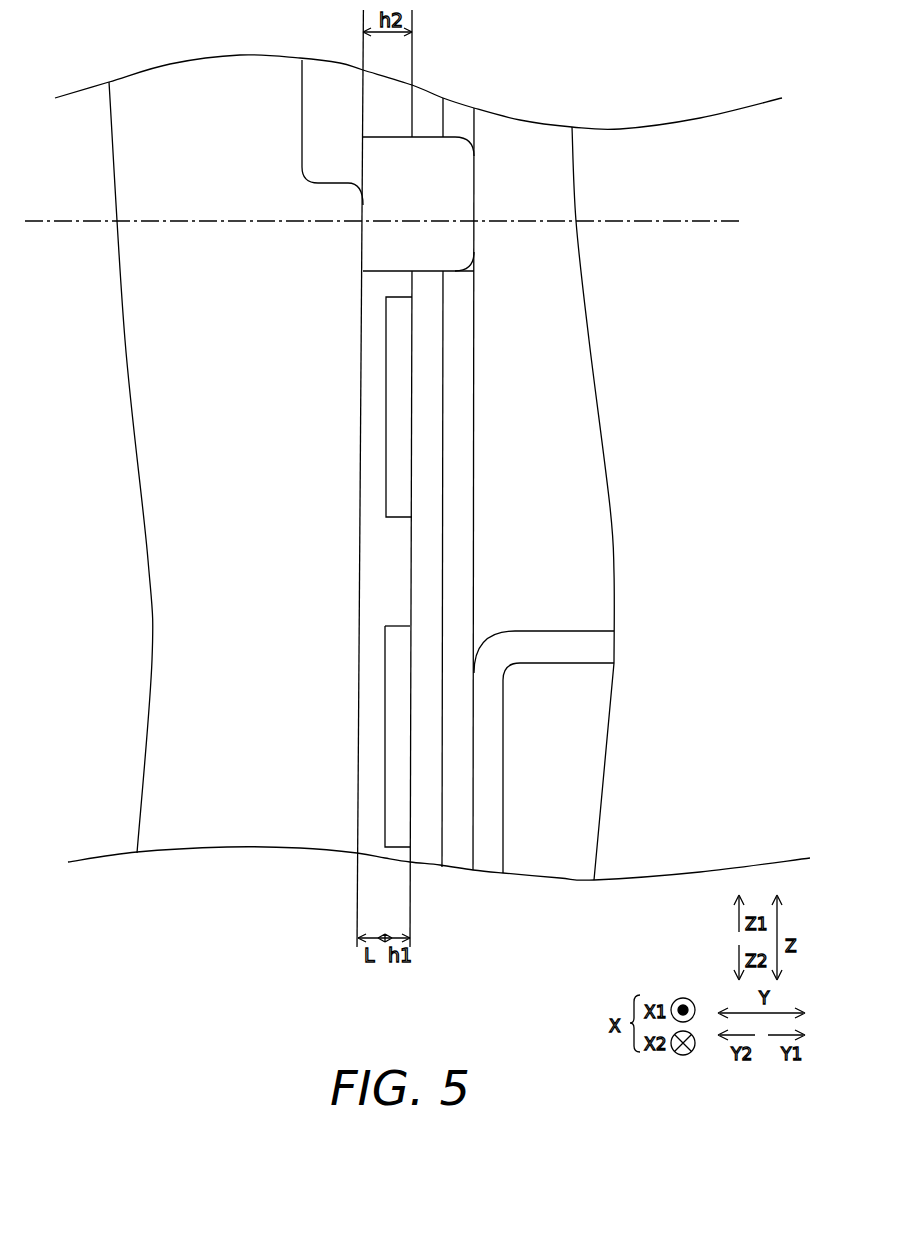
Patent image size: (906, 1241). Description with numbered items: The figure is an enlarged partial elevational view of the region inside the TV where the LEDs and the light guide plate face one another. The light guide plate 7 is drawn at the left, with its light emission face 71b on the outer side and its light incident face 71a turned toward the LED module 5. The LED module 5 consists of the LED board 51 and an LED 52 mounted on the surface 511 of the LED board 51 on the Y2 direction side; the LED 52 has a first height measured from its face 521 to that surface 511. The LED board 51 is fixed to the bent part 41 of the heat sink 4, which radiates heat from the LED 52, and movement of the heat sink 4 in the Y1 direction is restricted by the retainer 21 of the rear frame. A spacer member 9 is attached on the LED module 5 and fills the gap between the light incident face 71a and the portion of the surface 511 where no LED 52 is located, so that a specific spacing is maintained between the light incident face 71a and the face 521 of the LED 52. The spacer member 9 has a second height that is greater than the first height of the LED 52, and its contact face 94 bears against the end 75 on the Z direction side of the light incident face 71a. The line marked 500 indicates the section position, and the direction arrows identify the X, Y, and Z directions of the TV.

The LED module 5 is at (431, 609).
The light guide plate 7 is at (157, 514).
The spacer member 9 is at (435, 203).
The retainer 21 is at (492, 770).
The heat sink 4 is at (473, 489).
The bent part 41 is at (456, 845).
The LED board 51 is at (435, 609).
The LED 52 is at (418, 714).
The light incident face 71a is at (361, 446).
The light emission face 71b is at (185, 393).
The end 75 is at (325, 227).
The contact face 94 is at (357, 248).
The section line 500 is at (32, 224).
The surface 511 is at (405, 553).
The face 521 is at (380, 630).